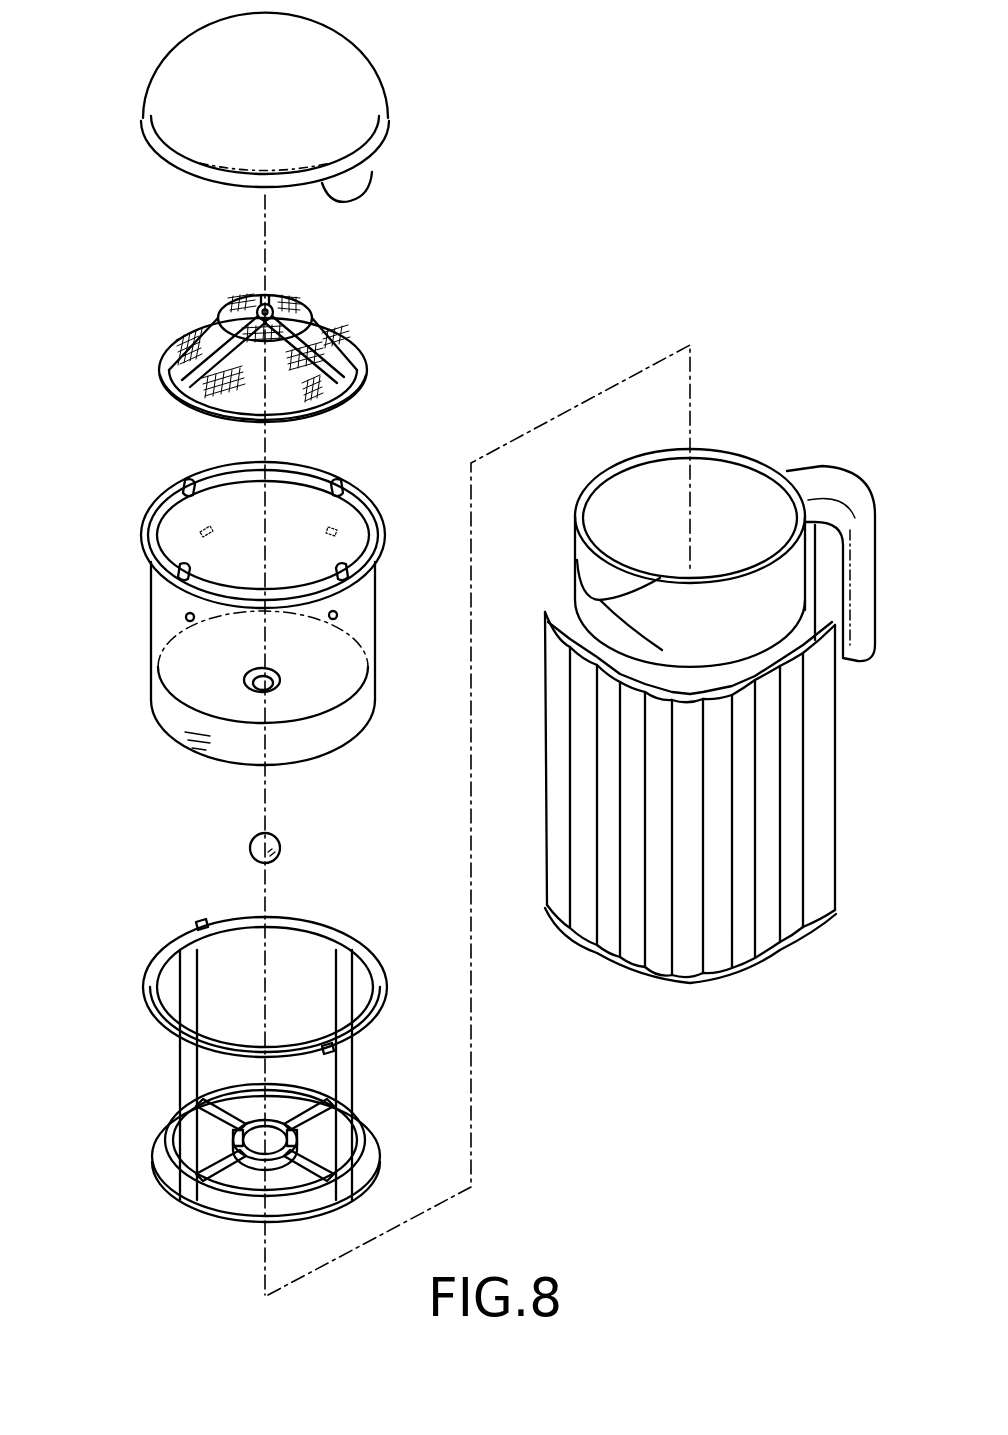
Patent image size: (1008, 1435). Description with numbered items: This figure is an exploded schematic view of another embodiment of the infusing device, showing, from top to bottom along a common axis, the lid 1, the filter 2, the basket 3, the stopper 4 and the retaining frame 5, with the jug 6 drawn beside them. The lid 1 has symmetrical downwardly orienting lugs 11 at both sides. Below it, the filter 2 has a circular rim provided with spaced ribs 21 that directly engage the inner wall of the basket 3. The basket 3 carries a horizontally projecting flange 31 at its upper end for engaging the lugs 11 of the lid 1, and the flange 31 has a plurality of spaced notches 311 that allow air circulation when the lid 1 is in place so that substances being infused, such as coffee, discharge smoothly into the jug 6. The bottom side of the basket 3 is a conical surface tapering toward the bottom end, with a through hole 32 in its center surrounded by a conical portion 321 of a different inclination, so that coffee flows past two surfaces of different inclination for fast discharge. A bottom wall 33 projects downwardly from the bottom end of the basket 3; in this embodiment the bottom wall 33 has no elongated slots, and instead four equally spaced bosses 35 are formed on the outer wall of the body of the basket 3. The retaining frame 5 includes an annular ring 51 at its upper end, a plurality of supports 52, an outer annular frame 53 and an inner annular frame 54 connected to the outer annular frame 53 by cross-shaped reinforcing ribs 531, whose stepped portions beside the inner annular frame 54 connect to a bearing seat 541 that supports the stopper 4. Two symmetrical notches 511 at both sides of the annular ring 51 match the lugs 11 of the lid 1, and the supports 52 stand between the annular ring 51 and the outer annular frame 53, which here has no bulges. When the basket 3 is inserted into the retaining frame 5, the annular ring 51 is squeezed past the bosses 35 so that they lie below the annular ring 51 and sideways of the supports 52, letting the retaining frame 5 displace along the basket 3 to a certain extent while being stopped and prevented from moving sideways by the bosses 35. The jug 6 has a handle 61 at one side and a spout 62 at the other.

The lid 1 is at (190, 38).
The lugs 11 is at (360, 178).
The filter 2 is at (365, 350).
The ribs 21 is at (190, 404).
The basket 3 is at (257, 615).
The flange 31 is at (380, 544).
The notches 311 is at (340, 486).
The through hole 32 is at (280, 682).
The conical portion 321 is at (270, 686).
The bottom wall 33 is at (165, 706).
The bosses 35 is at (188, 618).
The stopper 4 is at (282, 848).
The retaining frame 5 is at (268, 1073).
The annular ring 51 is at (372, 950).
The notches 511 is at (185, 935).
The supports 52 is at (180, 1115).
The outer annular frame 53 is at (222, 1195).
The reinforcing ribs 531 is at (320, 1120).
The inner annular frame 54 is at (265, 1172).
The bearing seat 541 is at (270, 1150).
The jug 6 is at (714, 730).
The handle 61 is at (862, 625).
The spout 62 is at (612, 616).